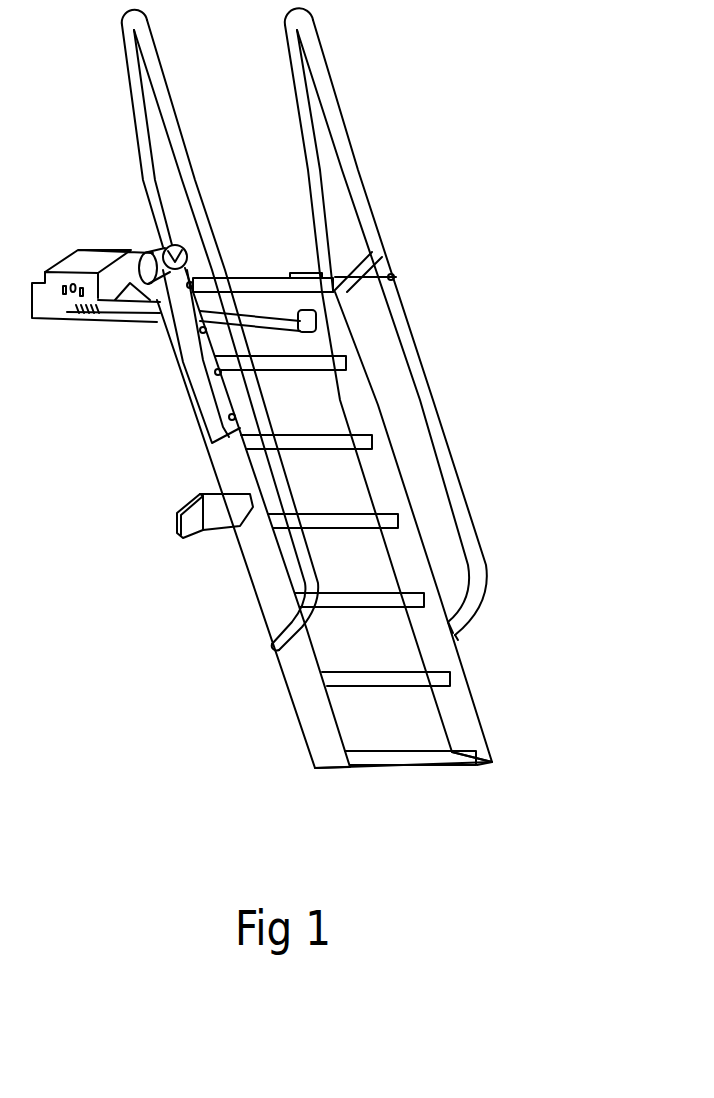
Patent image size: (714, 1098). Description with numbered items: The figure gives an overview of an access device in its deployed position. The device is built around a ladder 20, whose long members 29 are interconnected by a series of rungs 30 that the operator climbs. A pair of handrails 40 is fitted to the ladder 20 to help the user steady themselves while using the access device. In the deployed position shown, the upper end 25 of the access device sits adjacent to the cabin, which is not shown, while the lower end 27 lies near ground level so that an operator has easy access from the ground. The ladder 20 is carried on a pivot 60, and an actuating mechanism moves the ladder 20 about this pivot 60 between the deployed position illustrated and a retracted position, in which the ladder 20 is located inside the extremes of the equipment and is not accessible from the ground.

The ladder 20 is at (331, 398).
The upper end 25 is at (255, 275).
The lower end 27 is at (493, 760).
The long members 29 is at (466, 661).
The rungs 30 is at (358, 687).
The handrails 40 is at (440, 417).
The pivot 60 is at (175, 263).